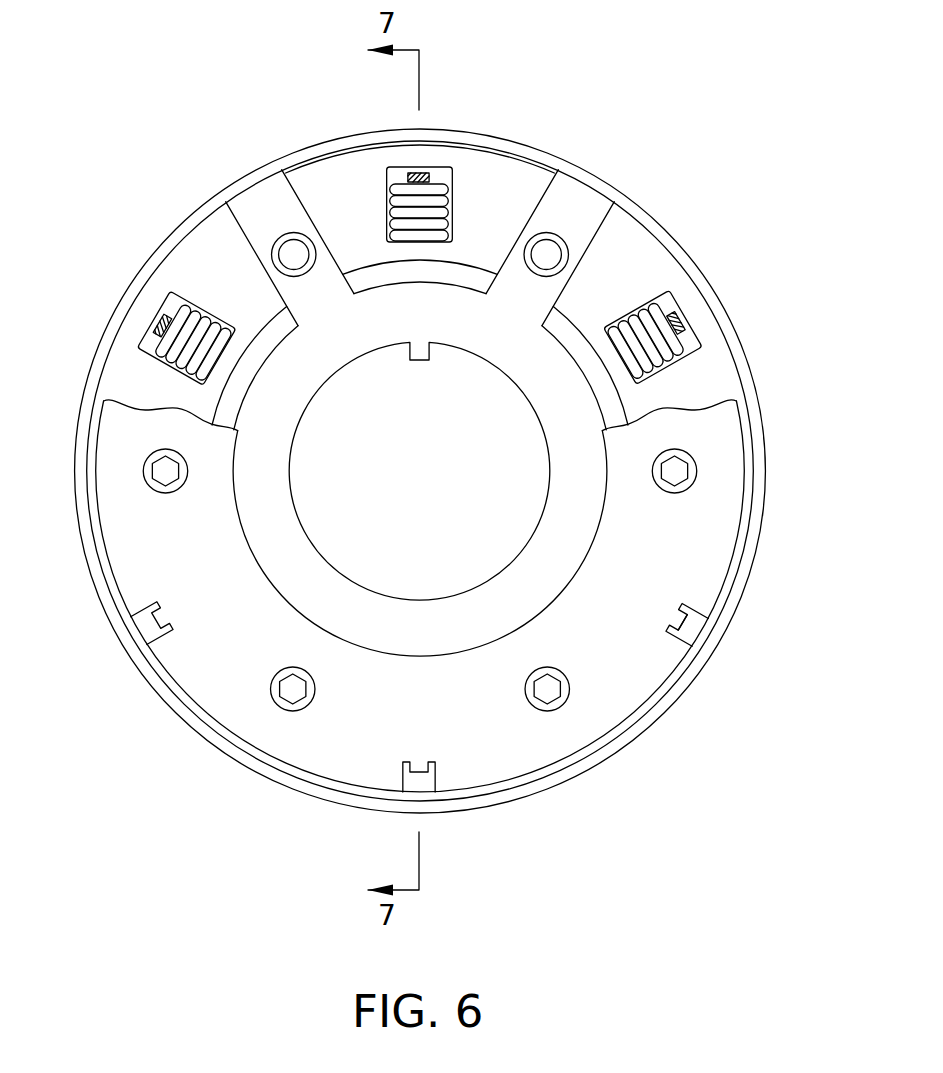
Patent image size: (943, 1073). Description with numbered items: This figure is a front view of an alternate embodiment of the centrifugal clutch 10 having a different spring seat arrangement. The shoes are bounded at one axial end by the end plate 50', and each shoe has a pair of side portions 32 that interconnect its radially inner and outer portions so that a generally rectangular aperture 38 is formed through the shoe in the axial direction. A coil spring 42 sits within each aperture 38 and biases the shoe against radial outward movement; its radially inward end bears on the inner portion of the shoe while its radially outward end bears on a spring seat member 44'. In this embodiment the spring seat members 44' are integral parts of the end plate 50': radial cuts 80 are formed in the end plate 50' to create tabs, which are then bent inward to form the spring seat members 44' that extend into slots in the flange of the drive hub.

The centrifugal clutch 10 is at (210, 165).
The side portions 32 is at (513, 181).
The aperture 38 is at (445, 170).
The spring 42 is at (680, 350).
The spring seat members 44' is at (745, 447).
The end plate 50' is at (399, 596).
The radial cuts 80 is at (695, 604).